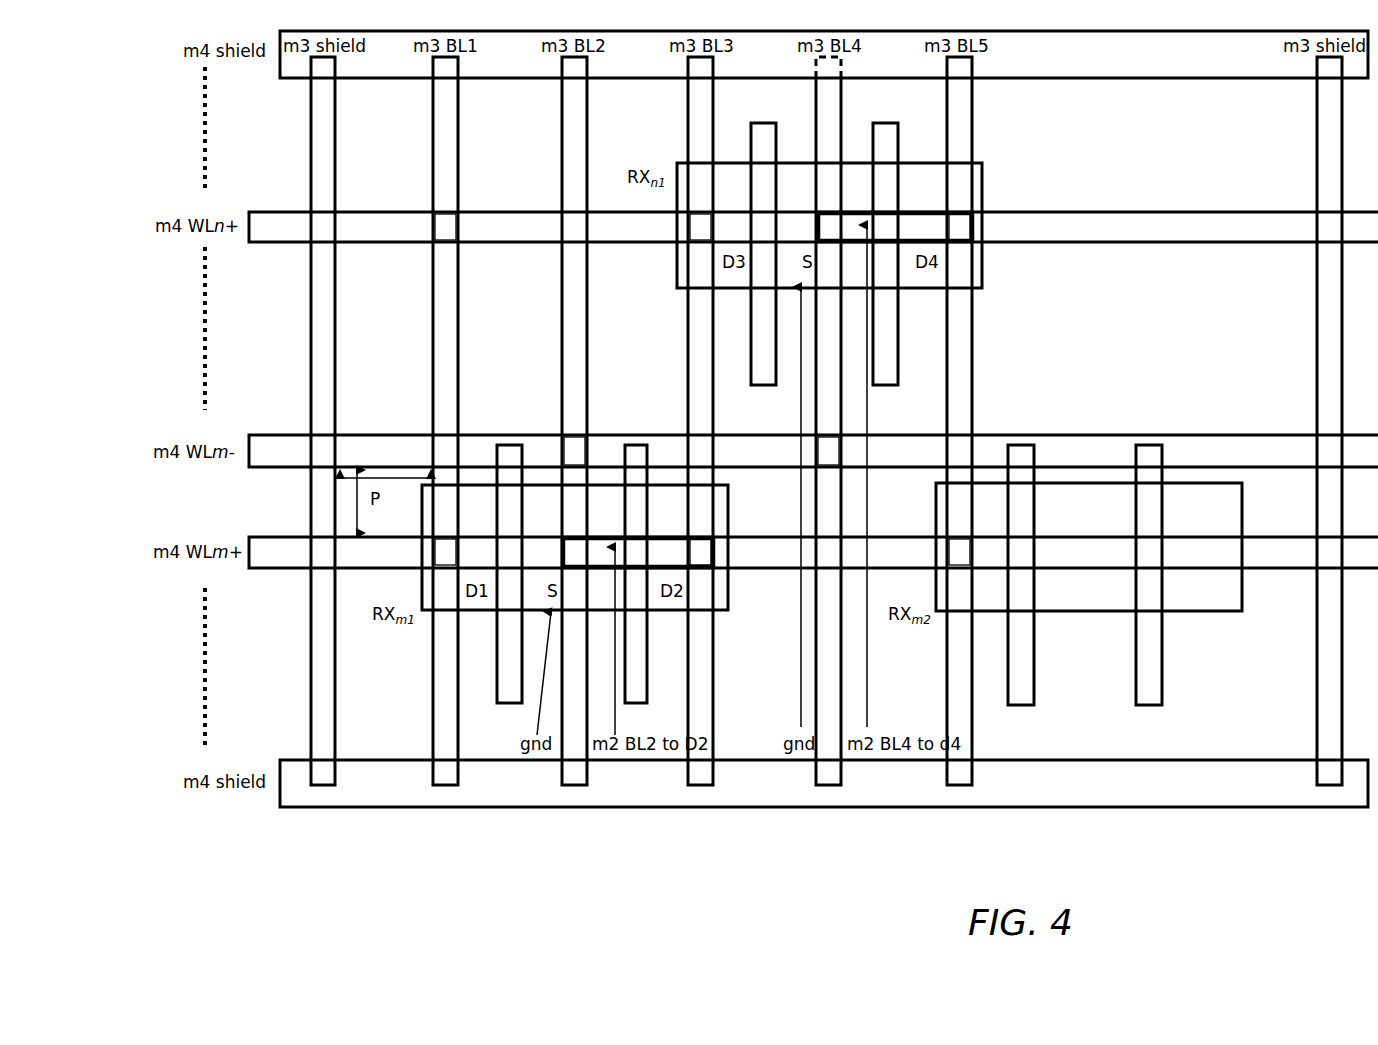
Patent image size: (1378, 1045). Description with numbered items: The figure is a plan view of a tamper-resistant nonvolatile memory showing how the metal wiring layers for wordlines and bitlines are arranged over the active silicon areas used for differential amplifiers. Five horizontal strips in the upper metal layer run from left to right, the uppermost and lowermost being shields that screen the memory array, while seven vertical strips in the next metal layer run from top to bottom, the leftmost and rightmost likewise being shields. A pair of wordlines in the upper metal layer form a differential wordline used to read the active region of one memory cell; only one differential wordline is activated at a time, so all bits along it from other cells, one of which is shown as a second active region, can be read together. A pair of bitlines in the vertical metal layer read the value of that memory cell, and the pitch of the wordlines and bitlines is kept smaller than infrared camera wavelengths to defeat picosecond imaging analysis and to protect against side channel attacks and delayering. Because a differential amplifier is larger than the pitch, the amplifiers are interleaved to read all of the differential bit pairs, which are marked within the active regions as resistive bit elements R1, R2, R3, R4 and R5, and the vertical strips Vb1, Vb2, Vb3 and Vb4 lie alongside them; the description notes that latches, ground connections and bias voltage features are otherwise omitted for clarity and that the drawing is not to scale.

The resistor R1 is at (445, 389).
The resistor R2 is at (574, 451).
The resistor R3 is at (700, 389).
The resistor R4 is at (828, 451).
The resistor R5 is at (959, 389).
The via/bias line Vb1 is at (509, 586).
The via/bias line Vb2 is at (638, 586).
The via/bias line Vb3 is at (764, 266).
The via/bias line Vb4 is at (891, 266).